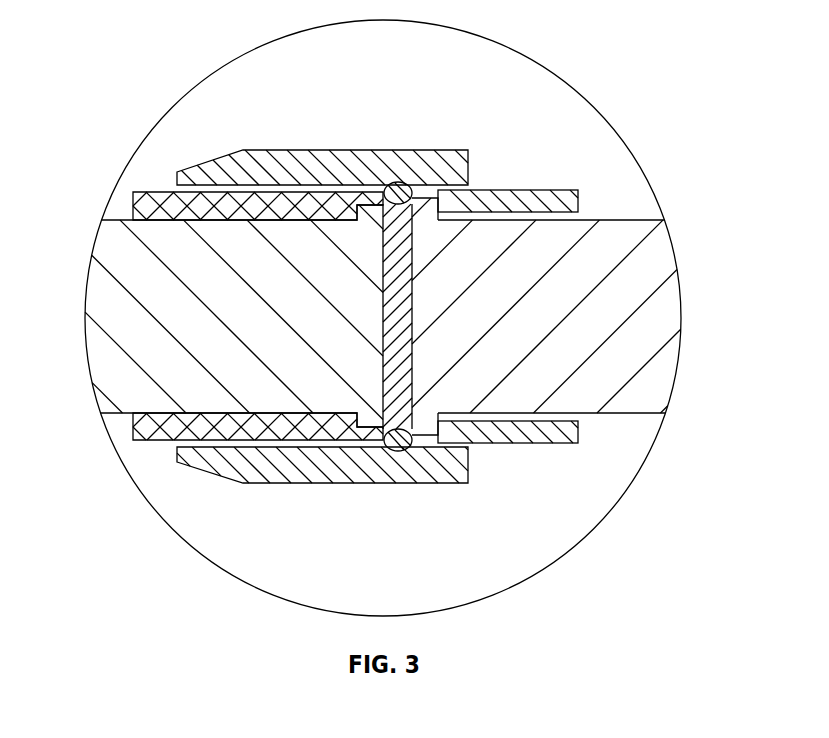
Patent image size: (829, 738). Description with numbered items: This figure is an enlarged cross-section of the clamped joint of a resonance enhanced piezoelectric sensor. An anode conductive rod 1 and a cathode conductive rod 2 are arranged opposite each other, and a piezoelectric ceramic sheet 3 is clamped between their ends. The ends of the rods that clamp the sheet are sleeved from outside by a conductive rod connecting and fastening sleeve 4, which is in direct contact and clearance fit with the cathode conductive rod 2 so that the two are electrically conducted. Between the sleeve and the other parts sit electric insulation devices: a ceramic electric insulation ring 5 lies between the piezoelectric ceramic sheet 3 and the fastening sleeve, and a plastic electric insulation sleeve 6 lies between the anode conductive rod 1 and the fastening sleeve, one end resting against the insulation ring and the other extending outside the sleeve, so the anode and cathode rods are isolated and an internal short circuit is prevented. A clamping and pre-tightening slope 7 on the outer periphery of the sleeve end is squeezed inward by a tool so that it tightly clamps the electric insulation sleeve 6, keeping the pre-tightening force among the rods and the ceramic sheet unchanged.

The anode conductive rod 1 is at (97, 293).
The cathode conductive rod 2 is at (672, 297).
The piezoelectric ceramic sheet 3 is at (453, 483).
The conductive rod connecting and fastening sleeve 4 is at (533, 192).
The electric insulation ring 5 is at (390, 181).
The electric insulation sleeve 6 is at (150, 205).
The clamping and pre-tightening slope 7 is at (215, 165).